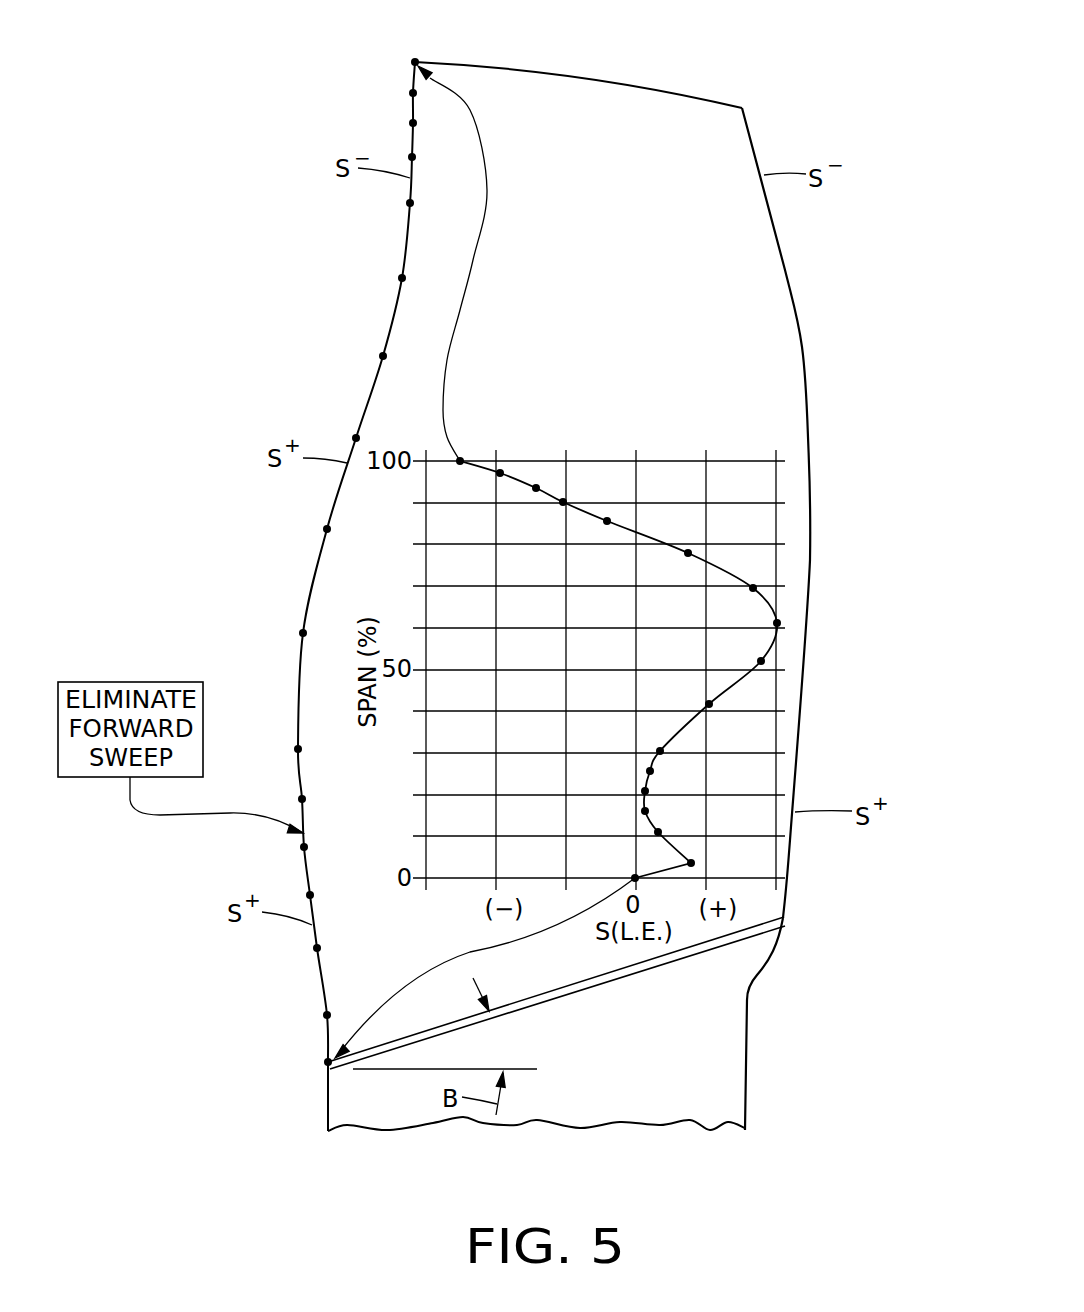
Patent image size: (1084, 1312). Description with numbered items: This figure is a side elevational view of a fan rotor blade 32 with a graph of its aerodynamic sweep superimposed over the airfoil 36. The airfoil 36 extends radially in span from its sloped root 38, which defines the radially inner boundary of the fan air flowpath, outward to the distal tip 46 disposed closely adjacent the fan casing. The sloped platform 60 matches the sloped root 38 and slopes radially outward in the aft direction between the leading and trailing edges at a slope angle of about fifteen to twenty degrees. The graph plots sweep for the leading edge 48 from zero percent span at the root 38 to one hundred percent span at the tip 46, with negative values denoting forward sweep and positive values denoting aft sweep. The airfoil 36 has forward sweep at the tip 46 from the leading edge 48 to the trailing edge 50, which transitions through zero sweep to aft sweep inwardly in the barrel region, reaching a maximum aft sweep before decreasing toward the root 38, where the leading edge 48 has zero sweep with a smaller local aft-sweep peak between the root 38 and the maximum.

The fan rotor blade 32 is at (793, 62).
The airfoil 36 is at (670, 345).
The sloped root 38 is at (680, 945).
The tip 46 is at (572, 76).
The leading edge 48 is at (393, 312).
The trailing edge 50 is at (802, 347).
The sloped platform 60 is at (757, 934).